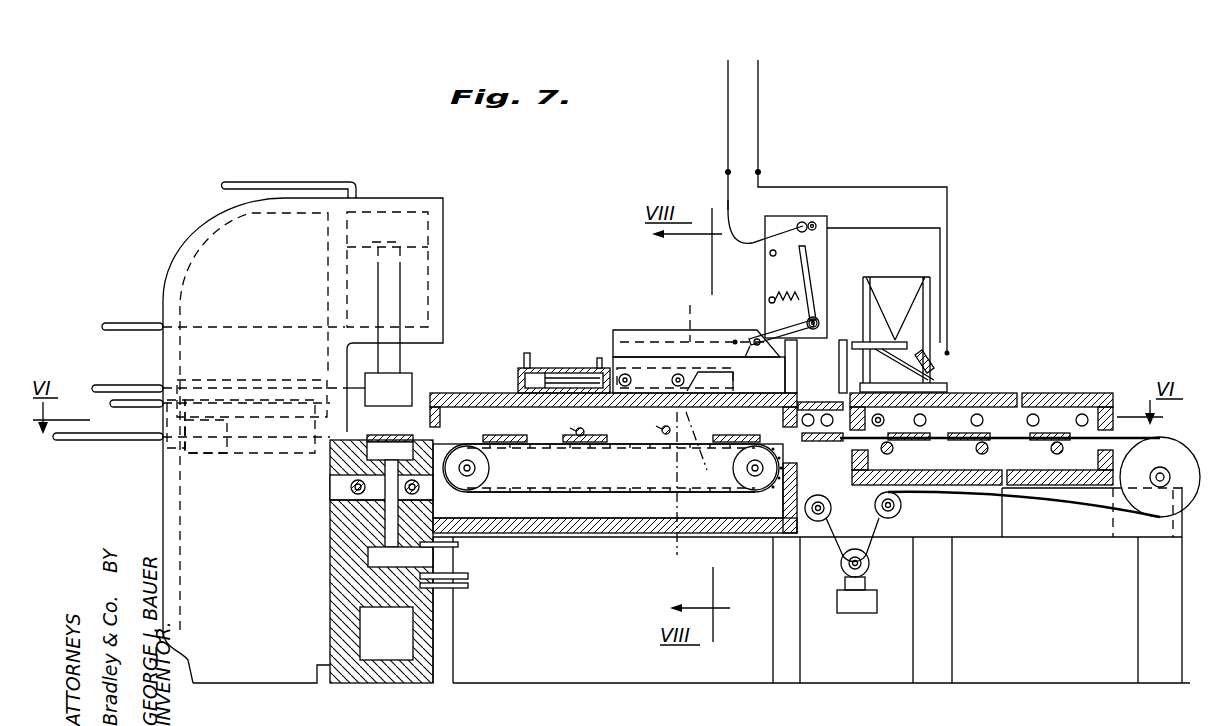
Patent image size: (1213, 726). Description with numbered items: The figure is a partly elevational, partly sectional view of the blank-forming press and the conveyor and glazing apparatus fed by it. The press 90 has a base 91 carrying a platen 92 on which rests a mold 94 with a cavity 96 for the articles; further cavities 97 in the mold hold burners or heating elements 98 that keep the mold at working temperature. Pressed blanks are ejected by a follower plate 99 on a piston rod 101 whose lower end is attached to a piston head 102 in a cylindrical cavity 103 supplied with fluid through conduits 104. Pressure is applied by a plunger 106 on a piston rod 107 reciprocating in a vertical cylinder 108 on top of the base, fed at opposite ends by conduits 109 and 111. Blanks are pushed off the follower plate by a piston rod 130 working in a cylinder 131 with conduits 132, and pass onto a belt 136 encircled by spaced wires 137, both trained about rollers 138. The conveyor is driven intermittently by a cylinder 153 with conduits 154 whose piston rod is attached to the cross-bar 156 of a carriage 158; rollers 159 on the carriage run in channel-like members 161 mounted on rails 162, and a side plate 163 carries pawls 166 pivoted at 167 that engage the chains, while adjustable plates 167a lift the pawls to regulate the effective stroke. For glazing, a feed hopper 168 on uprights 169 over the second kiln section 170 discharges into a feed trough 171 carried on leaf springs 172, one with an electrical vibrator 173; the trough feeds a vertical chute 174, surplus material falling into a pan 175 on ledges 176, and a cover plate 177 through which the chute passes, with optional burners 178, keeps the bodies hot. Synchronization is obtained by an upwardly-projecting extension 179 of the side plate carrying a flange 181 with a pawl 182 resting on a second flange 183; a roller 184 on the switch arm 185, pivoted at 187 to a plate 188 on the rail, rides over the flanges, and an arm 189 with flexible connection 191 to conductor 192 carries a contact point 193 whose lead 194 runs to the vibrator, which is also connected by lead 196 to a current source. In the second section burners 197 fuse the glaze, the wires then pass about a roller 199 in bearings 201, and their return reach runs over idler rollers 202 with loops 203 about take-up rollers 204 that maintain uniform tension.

The press 90 is at (272, 645).
The base 91 is at (297, 673).
The platen 92 is at (392, 503).
The mold 94 is at (350, 490).
The cavity 96 is at (332, 476).
The cavities 97 is at (353, 503).
The burners or heating elements 98 is at (353, 522).
The follower plate 99 is at (380, 447).
The piston rod 101 is at (392, 522).
The piston head 102 is at (458, 555).
The cylindrical cavity 103 is at (463, 582).
The conduits 104 is at (467, 587).
The plunger 106 is at (387, 390).
The piston rod 107 is at (388, 363).
The vertical cylinder 108 is at (424, 290).
The conduit 109 is at (133, 313).
The conduit 111 is at (250, 182).
The piston rod 130 is at (263, 440).
The cylinder 131 is at (190, 462).
The conduits 132 is at (128, 403).
The conveyor belt 136 is at (575, 441).
The wires 137 is at (647, 495).
The rollers 138 is at (489, 468).
The cylinder 153 is at (531, 367).
The conduits 154 is at (527, 352).
The cross-bar 156 is at (610, 362).
The carriage 158 is at (638, 374).
The wheels or rollers 159 is at (687, 372).
The channel-like members 161 is at (727, 383).
The rails 162 is at (790, 366).
The side plate 163 is at (640, 428).
The pawls 166 is at (745, 472).
The pivot 167 is at (687, 494).
The longitudinally adjustable plates 167a is at (668, 436).
The feed hopper 168 is at (920, 280).
The uprights 169 is at (930, 305).
The second section of kiln 170 is at (1047, 393).
The feed trough 171 is at (893, 345).
The leaf springs 172 is at (920, 374).
The electrical vibrator 173 is at (928, 360).
The vertical chute 174 is at (848, 388).
The pan 175 is at (800, 428).
The ledges 176 is at (800, 460).
The cover plate 177 is at (843, 405).
The burners 178 is at (768, 493).
The upwardly-projecting extension 179 is at (612, 353).
The horizontal flange or rib 181 is at (690, 314).
The pawl 182 is at (735, 342).
The second horizontal flange 183 is at (753, 357).
The roller 184 is at (757, 337).
The switch arm 185 is at (790, 326).
The pivot 187 is at (817, 321).
The plate 188 is at (805, 252).
The arm 189 is at (816, 226).
The flexible connection 191 is at (728, 197).
The electrical conductor 192 is at (728, 120).
The contact point 193 is at (813, 223).
The lead 194 is at (935, 257).
The lead 196 is at (758, 127).
The burners 197 is at (1083, 418).
The roller 199 is at (1148, 500).
The bearings 201 is at (1150, 478).
The idler rollers 202 is at (903, 508).
The loops 203 is at (870, 550).
The take-up rollers 204 is at (865, 572).